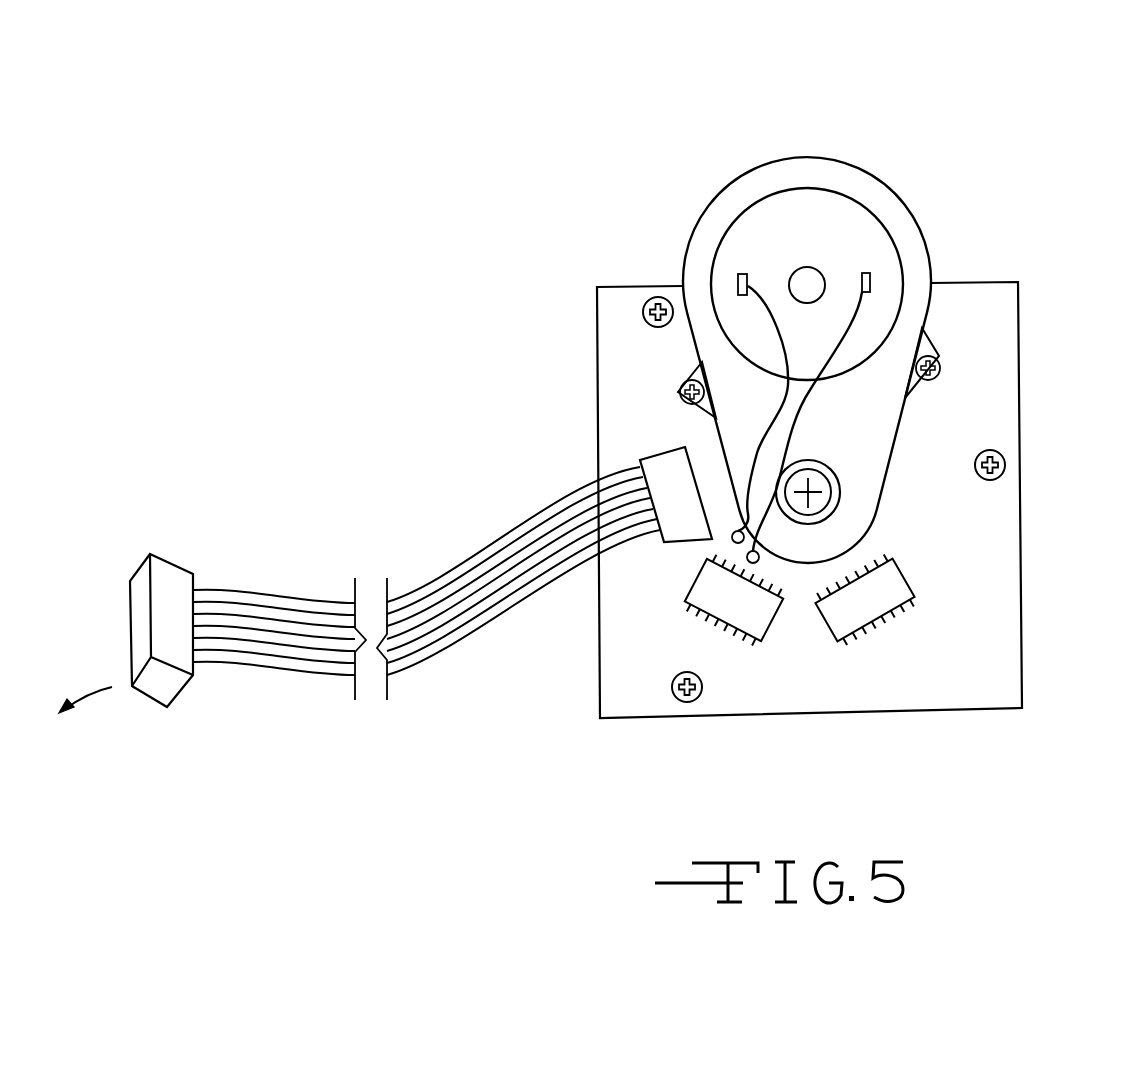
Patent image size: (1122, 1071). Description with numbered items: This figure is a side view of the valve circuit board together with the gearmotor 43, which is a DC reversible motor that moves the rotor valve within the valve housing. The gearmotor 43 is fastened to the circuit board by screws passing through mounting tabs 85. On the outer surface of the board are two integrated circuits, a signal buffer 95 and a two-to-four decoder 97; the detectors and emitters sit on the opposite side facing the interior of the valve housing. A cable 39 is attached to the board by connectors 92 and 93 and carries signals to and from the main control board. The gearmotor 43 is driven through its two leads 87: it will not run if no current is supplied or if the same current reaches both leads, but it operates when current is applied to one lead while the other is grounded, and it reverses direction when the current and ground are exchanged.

The gearmotor 43 is at (805, 178).
The leads 87 is at (877, 280).
The mounting tabs 85 is at (932, 348).
The connector 92 is at (655, 455).
The cable 39 is at (478, 563).
The connector 93 is at (131, 648).
The signal buffer 95 is at (725, 667).
The 2-to-4 decoder 97 is at (878, 662).